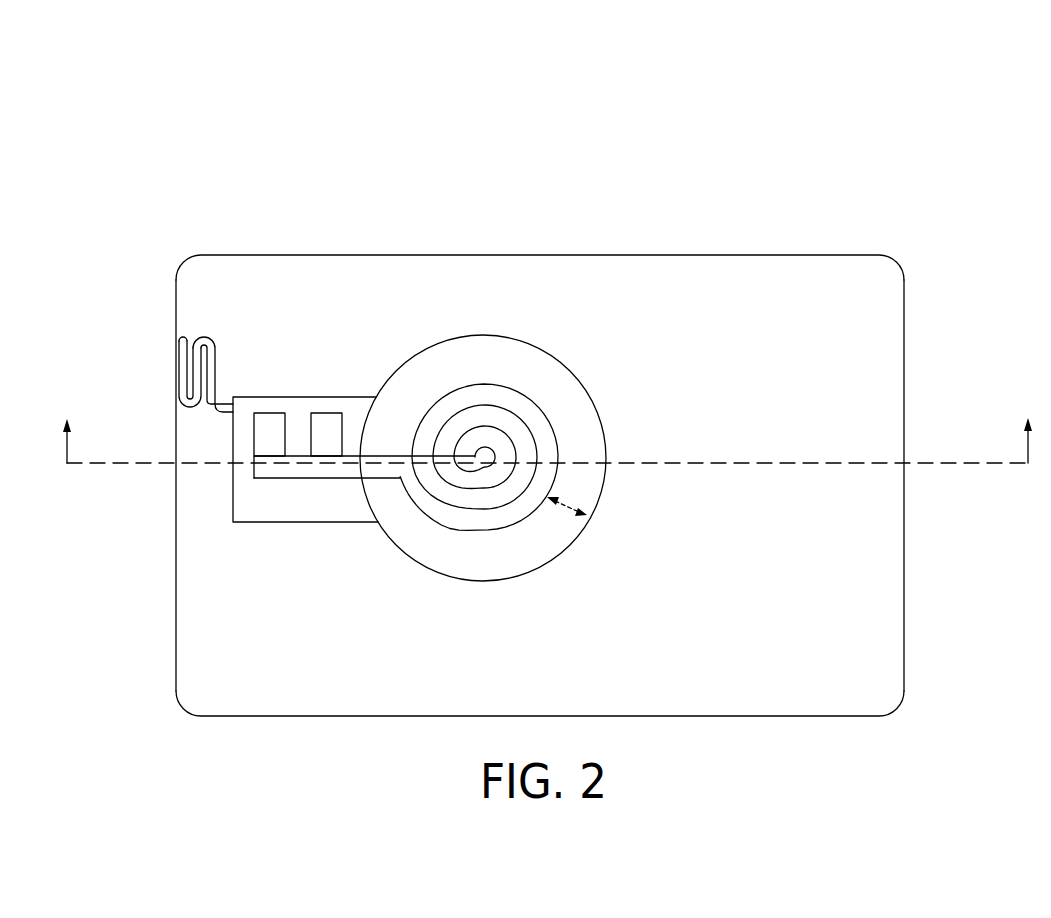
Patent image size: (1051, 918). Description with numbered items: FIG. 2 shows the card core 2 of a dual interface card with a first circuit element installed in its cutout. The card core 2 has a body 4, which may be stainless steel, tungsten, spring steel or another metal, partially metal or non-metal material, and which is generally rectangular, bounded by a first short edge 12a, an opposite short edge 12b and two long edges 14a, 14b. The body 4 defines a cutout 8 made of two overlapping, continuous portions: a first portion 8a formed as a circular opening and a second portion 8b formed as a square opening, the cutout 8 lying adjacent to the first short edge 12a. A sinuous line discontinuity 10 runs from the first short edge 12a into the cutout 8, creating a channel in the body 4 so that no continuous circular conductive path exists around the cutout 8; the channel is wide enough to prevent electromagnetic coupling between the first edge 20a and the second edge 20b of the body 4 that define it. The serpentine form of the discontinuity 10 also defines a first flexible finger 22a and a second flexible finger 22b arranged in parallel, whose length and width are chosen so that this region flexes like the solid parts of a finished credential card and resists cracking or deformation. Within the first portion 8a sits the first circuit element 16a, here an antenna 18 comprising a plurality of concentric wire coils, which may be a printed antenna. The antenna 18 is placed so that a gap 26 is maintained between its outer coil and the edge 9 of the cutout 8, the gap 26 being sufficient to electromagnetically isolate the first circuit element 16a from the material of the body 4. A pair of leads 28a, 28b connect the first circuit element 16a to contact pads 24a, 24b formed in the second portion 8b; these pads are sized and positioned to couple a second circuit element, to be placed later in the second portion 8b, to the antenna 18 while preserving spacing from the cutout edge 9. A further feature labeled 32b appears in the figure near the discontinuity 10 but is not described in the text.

The card core 2 is at (753, 165).
The body 4 is at (363, 255).
The cutout 8 is at (470, 335).
The first portion of the cutout 8a is at (502, 377).
The second portion of the cutout 8b is at (263, 502).
The edge of the cutout 9 is at (550, 558).
The sinuous line discontinuity 10 is at (177, 400).
The first short edge 12a is at (176, 588).
The short edge 12b is at (904, 397).
The long edge 14a is at (635, 255).
The long edge 14b is at (805, 716).
The first circuit element 16a is at (532, 398).
The antenna 18 is at (556, 447).
The first edge 20a is at (212, 347).
The second edge 20b is at (186, 368).
The first flexible finger 22a is at (220, 408).
The second flexible finger 22b is at (197, 345).
The contact pad 24a is at (265, 413).
The contact pad 24b is at (326, 413).
The gap 26 is at (568, 508).
The lead 28a is at (380, 455).
The lead 28b is at (297, 478).
The trace terminal 32b is at (213, 338).